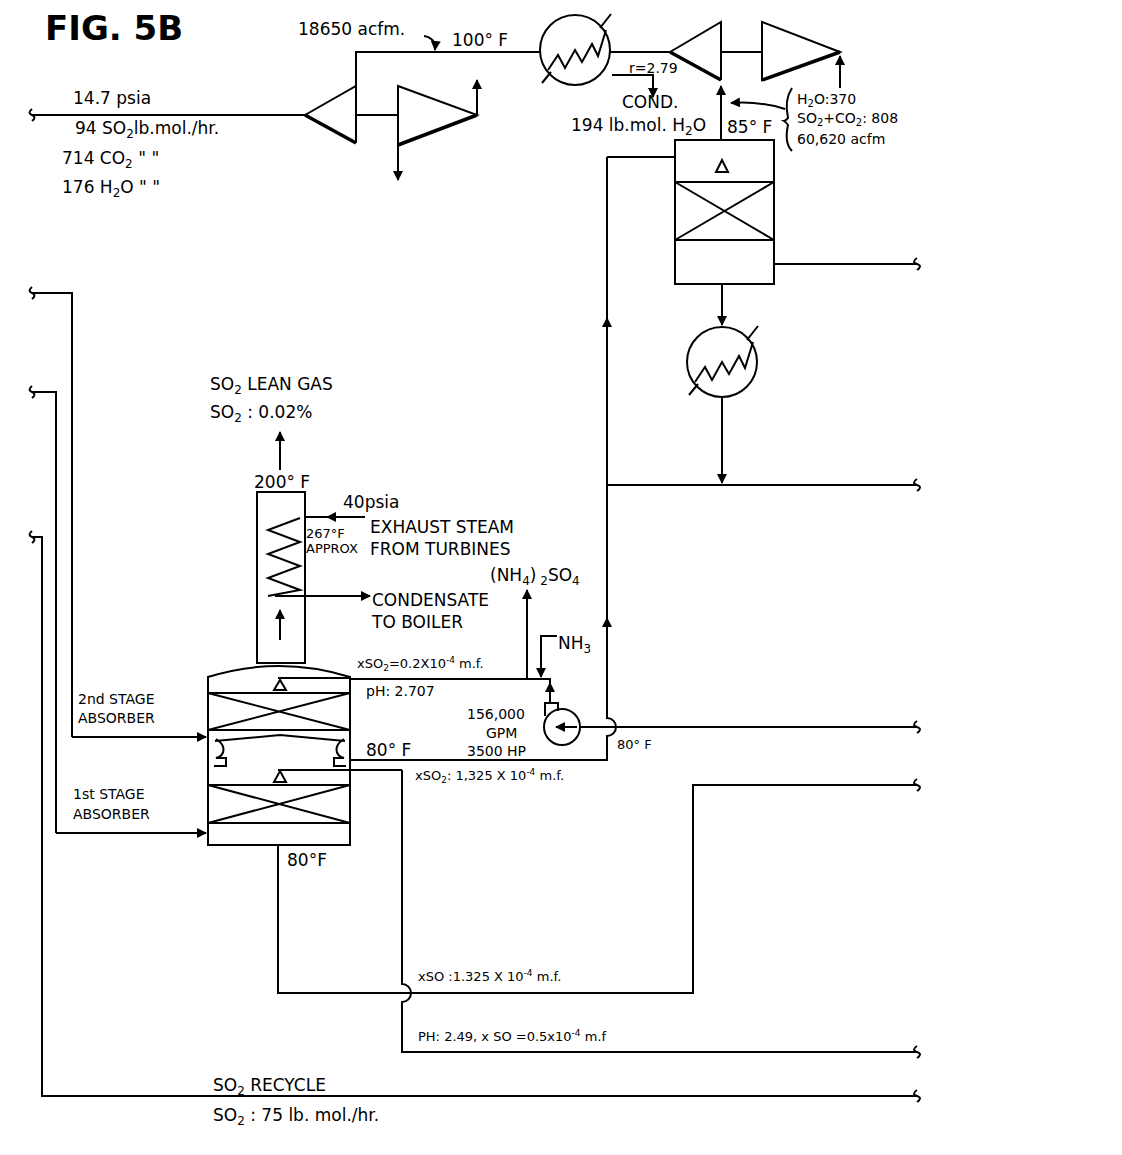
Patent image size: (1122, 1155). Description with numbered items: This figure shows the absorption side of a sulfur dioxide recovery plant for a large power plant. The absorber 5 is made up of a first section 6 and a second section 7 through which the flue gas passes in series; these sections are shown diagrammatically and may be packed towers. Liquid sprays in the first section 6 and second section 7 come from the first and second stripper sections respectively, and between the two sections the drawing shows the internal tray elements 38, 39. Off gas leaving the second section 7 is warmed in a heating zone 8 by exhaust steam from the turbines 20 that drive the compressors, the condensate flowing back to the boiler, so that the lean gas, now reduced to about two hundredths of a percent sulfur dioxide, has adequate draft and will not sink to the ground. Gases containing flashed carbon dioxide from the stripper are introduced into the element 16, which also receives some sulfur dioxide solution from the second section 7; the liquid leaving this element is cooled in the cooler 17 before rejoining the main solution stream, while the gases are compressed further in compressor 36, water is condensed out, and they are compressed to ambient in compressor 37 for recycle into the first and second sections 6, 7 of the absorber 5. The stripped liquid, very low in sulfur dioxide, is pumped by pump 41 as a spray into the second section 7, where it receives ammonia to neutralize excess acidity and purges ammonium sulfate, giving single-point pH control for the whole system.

The absorber 5 is at (301, 739).
The first section 6 is at (350, 807).
The second section 7 is at (350, 717).
The heating zone 8 is at (257, 559).
The element 16 is at (550, 28).
The cooler 17 is at (696, 336).
The turbines 20 is at (435, 134).
The compressor 36 is at (700, 36).
The compressor 37 is at (326, 98).
The chimney tray 38 is at (287, 738).
The chimney tray 39 is at (352, 762).
The pump 41 is at (570, 718).